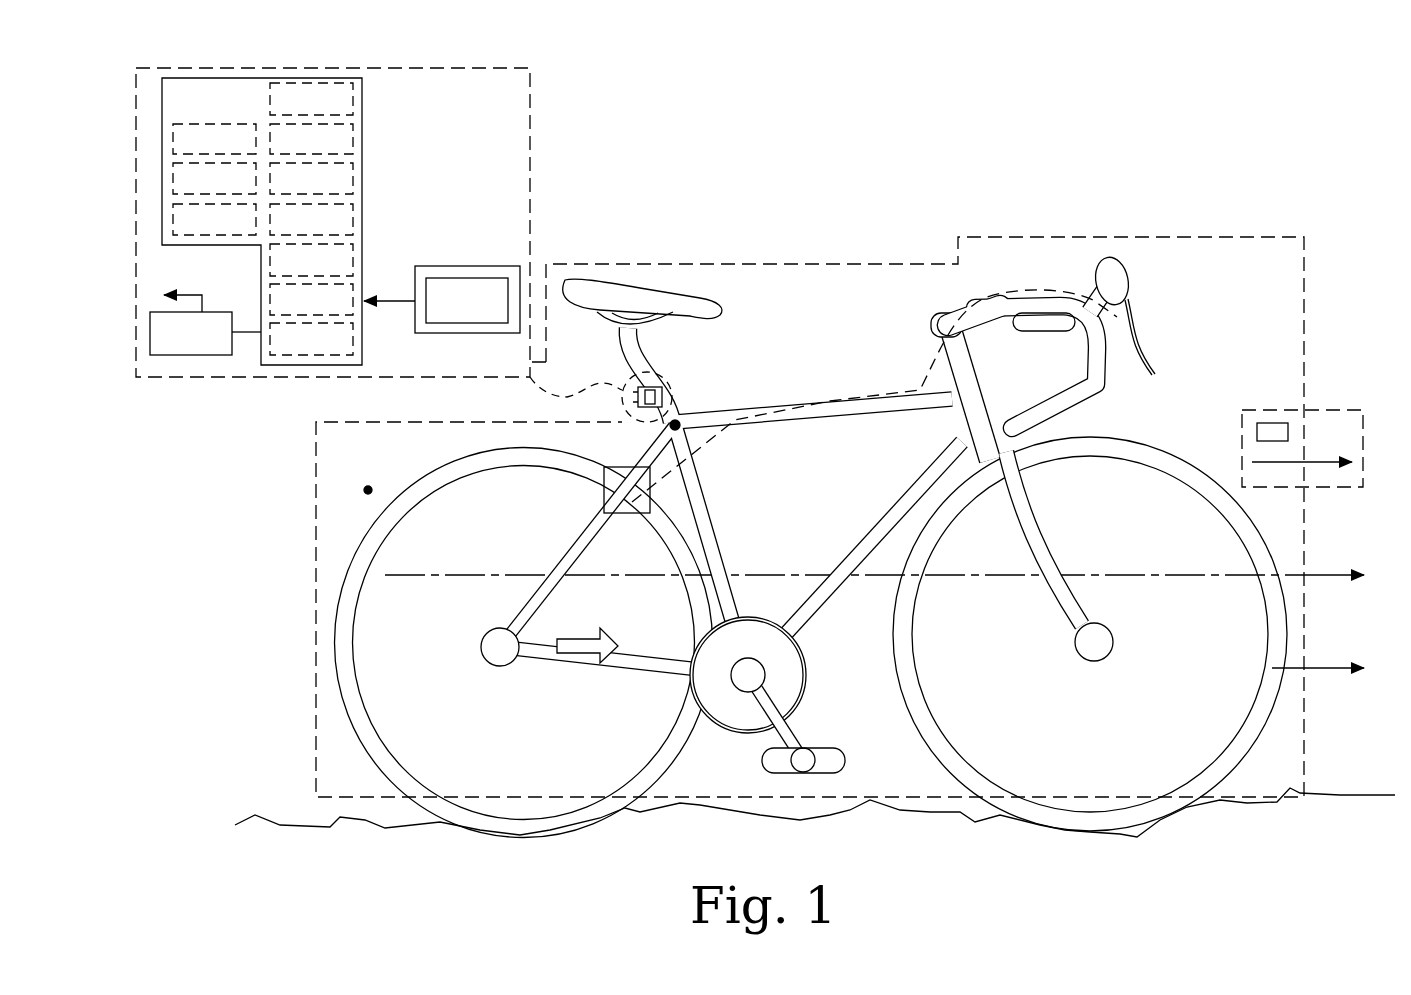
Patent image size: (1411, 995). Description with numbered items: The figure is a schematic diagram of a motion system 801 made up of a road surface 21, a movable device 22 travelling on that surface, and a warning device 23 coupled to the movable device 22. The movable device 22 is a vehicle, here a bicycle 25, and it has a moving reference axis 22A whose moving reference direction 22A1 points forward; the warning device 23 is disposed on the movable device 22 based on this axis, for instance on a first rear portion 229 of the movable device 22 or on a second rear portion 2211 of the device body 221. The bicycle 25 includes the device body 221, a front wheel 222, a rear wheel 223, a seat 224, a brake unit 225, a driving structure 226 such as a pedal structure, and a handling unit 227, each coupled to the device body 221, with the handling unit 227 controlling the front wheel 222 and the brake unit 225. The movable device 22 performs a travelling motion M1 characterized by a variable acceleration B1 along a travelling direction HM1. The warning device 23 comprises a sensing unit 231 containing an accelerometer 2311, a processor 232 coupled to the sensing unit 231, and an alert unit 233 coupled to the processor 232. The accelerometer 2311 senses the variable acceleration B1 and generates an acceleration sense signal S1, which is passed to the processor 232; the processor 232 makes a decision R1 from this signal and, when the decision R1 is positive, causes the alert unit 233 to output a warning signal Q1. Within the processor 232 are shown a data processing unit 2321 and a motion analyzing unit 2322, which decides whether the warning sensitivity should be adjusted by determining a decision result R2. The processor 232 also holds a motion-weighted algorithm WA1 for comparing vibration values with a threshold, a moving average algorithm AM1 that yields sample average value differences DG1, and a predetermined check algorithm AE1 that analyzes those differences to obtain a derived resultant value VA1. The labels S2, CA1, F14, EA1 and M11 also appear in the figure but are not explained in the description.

The motion system 801 is at (842, 233).
The processor 232 is at (362, 243).
The decision result R2 is at (311, 98).
The derived resultant value VA1 is at (214, 139).
The motion-weighted algorithm WA1 is at (311, 139).
The sample average value differences DG1 is at (214, 179).
The data processing unit 2321 is at (311, 179).
The predetermined check algorithm AE1 is at (214, 219).
The motion analyzing unit 2322 is at (311, 219).
The second signal S2 is at (311, 259).
The moving average algorithm AM1 is at (311, 299).
The decision R1 is at (311, 340).
The alert unit 233 is at (205, 334).
The warning signal Q1 is at (182, 279).
The sensing unit 231 is at (430, 333).
The accelerometer 2311 is at (467, 301).
The calculation CA1 is at (446, 277).
The acceleration sense signal S1 is at (389, 280).
The movable device 22 is at (878, 264).
The road surface 21 is at (918, 815).
The moving reference axis 22A is at (477, 575).
The moving reference direction 22A1 is at (1329, 551).
The travelling direction HM1 is at (1318, 645).
The rear wheel 223 is at (365, 725).
The front wheel 222 is at (1242, 740).
The device body 221 is at (893, 502).
The bicycle 25 is at (803, 517).
The second rear portion 2211 is at (665, 432).
The handling unit 227 is at (1117, 395).
The seat 224 is at (722, 310).
The driving structure 226 is at (830, 752).
The brake unit 225 is at (627, 513).
The driving force F14 is at (586, 627).
The electronic area EA1 is at (714, 490).
The first rear portion 229 is at (368, 490).
The warning device 23 is at (657, 388).
The motion M1 is at (1335, 410).
The motion sensor M11 is at (1283, 423).
The variable acceleration B1 is at (1302, 438).